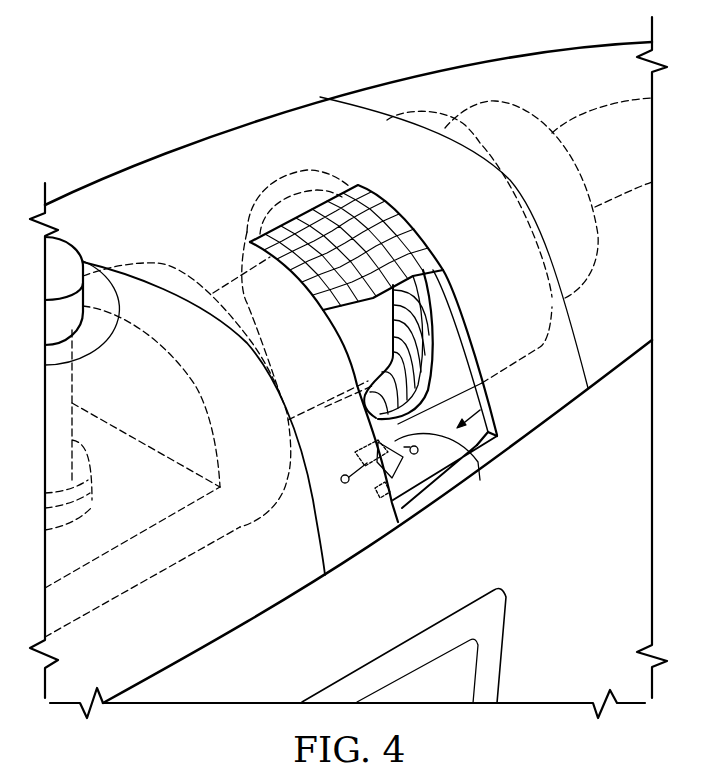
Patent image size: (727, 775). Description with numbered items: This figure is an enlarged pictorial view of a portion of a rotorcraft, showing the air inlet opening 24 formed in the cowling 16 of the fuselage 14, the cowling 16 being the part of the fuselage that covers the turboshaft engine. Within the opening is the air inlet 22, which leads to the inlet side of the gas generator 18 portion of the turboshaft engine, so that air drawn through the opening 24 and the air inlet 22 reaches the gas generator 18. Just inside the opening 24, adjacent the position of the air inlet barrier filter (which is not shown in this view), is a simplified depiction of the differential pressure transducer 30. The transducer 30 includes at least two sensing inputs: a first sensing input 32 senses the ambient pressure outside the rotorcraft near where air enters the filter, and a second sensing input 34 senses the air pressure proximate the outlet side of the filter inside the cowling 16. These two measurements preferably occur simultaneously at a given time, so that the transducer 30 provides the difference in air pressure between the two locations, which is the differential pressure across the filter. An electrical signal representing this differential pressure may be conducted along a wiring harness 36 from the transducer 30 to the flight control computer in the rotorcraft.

The fuselage 14 is at (510, 55).
The cowling 16 is at (176, 145).
The gas generator 18 is at (248, 222).
The air inlet 22 is at (495, 414).
The air inlet opening 24 is at (357, 360).
The differential pressure transducer 30 is at (424, 484).
The first sensing input 32 is at (345, 476).
The second sensing input 34 is at (482, 473).
The wiring harness 36 is at (383, 494).